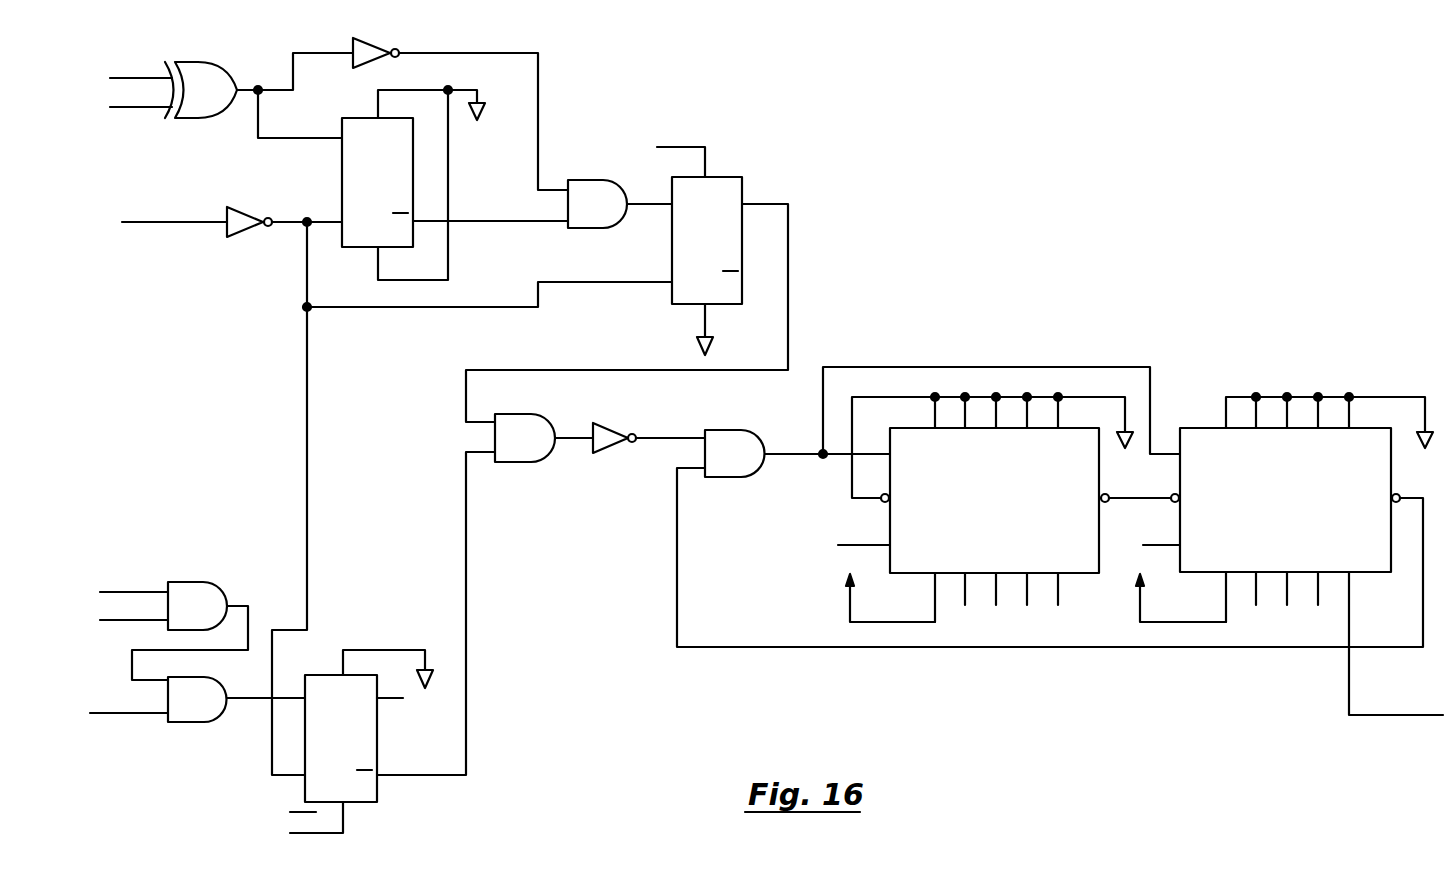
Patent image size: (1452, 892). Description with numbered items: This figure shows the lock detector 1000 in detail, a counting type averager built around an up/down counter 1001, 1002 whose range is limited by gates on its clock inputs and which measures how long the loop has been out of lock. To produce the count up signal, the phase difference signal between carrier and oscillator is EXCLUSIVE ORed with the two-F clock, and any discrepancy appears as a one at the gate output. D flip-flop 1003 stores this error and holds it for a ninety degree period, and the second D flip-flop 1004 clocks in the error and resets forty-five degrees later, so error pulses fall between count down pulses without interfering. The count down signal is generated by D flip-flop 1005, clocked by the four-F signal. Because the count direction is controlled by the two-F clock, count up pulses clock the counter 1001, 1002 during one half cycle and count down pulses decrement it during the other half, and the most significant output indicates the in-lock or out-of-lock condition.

The lock detector 1000 is at (1044, 194).
The up/down counter 1001 is at (1078, 428).
The up/down counter 1002 is at (1190, 428).
The D flip-flop 1003 is at (414, 180).
The second D flip-flop 1004 is at (736, 177).
The D flip-flop 1005 is at (315, 675).